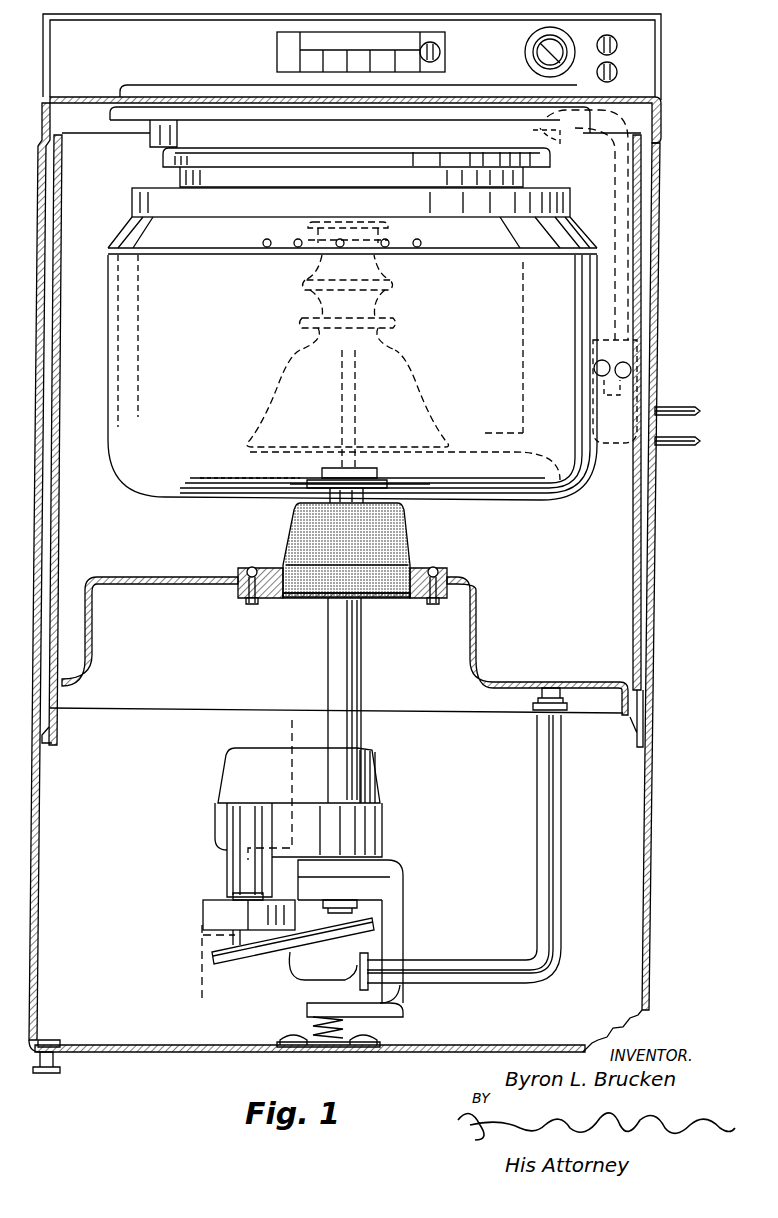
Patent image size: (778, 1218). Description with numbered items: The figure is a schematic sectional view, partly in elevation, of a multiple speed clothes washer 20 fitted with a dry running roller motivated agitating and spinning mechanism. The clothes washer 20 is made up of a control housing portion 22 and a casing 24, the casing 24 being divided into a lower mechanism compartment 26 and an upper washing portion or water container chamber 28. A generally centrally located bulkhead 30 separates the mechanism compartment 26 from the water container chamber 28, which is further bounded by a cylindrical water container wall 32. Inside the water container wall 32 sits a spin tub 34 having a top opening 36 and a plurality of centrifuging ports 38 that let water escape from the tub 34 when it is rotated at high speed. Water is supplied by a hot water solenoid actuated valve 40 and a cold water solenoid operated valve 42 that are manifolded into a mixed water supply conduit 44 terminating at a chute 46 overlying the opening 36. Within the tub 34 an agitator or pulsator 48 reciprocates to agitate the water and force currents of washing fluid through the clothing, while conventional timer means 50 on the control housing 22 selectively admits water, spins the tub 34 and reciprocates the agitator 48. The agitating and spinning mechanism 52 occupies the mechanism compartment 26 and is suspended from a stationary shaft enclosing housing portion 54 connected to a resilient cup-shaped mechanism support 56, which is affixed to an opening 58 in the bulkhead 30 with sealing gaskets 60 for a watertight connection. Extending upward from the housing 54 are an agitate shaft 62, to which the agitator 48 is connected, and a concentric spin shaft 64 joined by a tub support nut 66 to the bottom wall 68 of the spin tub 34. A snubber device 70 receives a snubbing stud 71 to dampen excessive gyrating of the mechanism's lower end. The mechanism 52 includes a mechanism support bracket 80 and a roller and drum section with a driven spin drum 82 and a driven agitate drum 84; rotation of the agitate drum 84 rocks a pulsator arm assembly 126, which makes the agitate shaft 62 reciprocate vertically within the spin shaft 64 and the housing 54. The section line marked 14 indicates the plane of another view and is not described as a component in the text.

The section line 14- 14 is at (288, 730).
The clothes washer 20 is at (662, 183).
The control housing portion 22 is at (642, 72).
The casing 24 is at (655, 598).
The mechanism compartment 26 is at (614, 849).
The water container chamber 28 is at (575, 559).
The bulkhead 30 is at (172, 585).
The water container wall 32 is at (60, 464).
The spin tub 34 is at (163, 486).
The top opening 36 is at (203, 148).
The centrifuging ports 38 is at (340, 248).
The hot water solenoid actuated valve 40 is at (632, 368).
The cold water solenoid operated valve 42 is at (632, 397).
The mixed water supply conduit 44 is at (620, 240).
The chute 46 is at (540, 150).
The agitator 48 is at (400, 368).
The timer means 50 is at (510, 64).
The agitating and spinning mechanism 52 is at (217, 797).
The shaft enclosing housing portion 54 is at (352, 663).
The mechanism support 56 is at (384, 530).
The opening 58 is at (279, 599).
The sealing gaskets 60 is at (426, 600).
The agitate shaft 62 is at (352, 427).
The spin shaft 64 is at (378, 477).
The tub support nut 66 is at (330, 468).
The bottom wall 68 is at (310, 487).
The snubber device 70 is at (347, 1031).
The snubbing stud 71 is at (307, 1025).
The mechanism support bracket 80 is at (394, 879).
The driven spin drum 82 is at (372, 893).
The agitate drum 84 is at (210, 911).
The pulsator arm assembly 126 is at (218, 962).